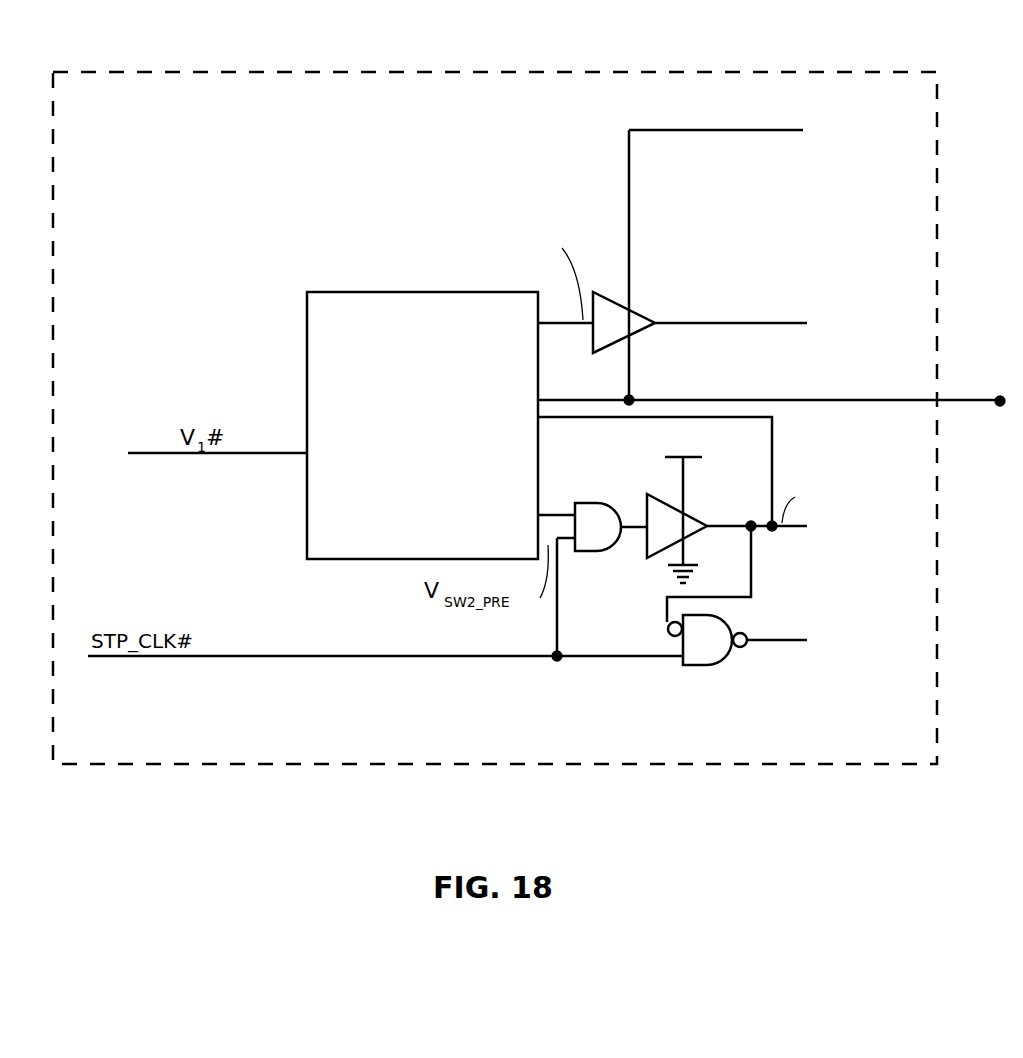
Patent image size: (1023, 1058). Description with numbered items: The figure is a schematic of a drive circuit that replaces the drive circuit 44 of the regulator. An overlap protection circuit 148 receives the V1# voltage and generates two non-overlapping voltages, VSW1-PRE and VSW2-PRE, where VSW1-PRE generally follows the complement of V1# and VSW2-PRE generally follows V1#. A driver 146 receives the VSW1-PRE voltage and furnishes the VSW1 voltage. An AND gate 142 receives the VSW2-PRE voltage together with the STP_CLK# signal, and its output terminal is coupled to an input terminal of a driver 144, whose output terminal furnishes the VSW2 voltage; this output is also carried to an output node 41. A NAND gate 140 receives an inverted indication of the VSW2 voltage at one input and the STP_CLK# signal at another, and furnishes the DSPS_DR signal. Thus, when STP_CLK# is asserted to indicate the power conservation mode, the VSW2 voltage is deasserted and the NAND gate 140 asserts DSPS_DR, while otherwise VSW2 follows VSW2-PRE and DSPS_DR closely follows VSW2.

The drive circuit 44 is at (913, 72).
The output node 41 is at (998, 407).
The overlap protection circuit 148 is at (307, 522).
The driver 146 is at (645, 321).
The driver 144 is at (690, 512).
The AND gate 142 is at (584, 503).
The NAND gate 140 is at (713, 666).